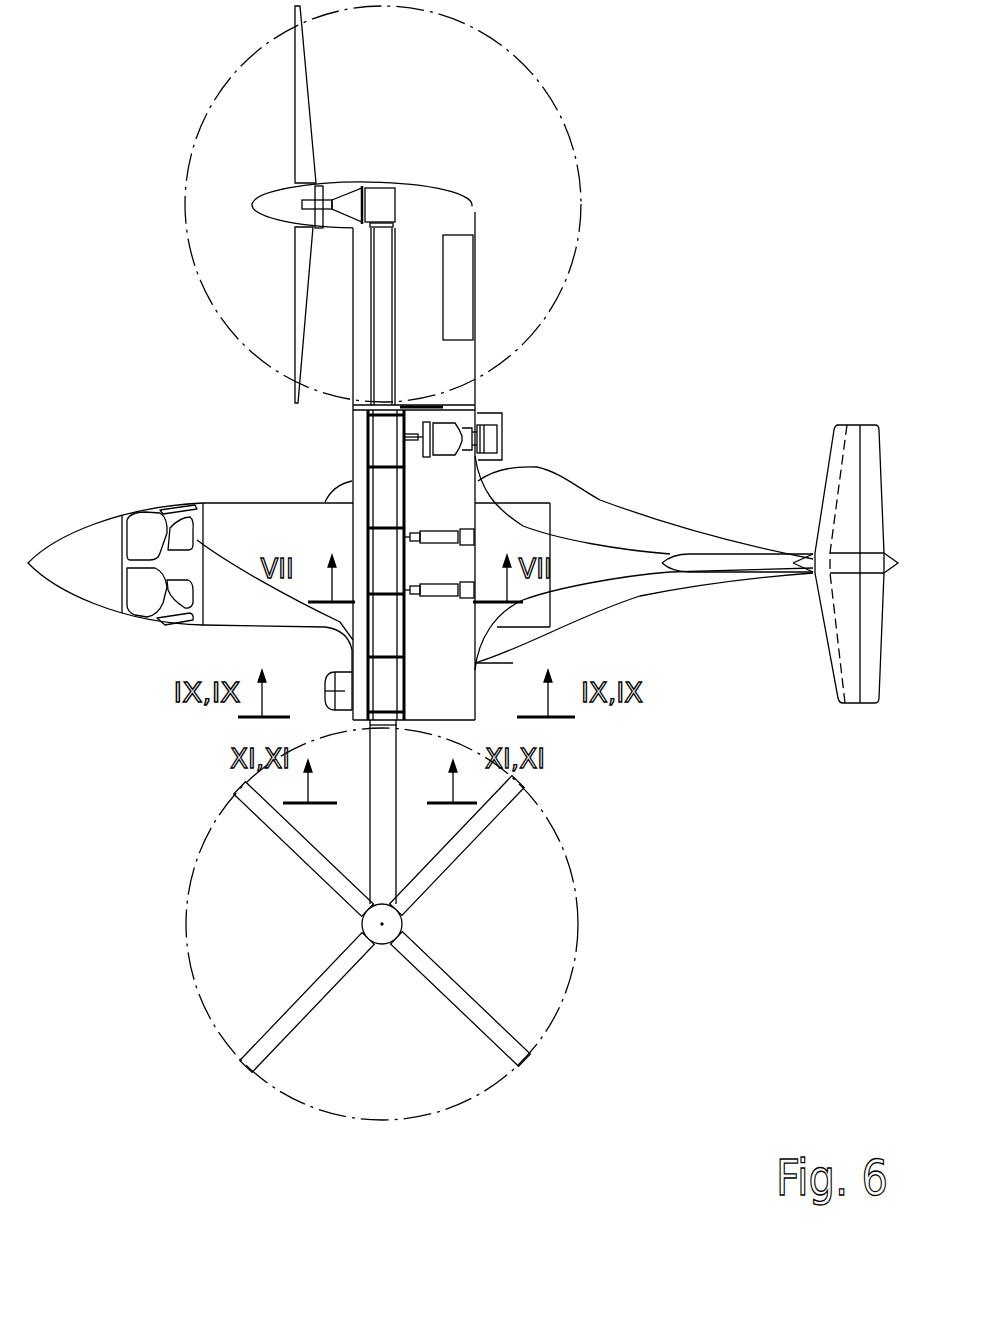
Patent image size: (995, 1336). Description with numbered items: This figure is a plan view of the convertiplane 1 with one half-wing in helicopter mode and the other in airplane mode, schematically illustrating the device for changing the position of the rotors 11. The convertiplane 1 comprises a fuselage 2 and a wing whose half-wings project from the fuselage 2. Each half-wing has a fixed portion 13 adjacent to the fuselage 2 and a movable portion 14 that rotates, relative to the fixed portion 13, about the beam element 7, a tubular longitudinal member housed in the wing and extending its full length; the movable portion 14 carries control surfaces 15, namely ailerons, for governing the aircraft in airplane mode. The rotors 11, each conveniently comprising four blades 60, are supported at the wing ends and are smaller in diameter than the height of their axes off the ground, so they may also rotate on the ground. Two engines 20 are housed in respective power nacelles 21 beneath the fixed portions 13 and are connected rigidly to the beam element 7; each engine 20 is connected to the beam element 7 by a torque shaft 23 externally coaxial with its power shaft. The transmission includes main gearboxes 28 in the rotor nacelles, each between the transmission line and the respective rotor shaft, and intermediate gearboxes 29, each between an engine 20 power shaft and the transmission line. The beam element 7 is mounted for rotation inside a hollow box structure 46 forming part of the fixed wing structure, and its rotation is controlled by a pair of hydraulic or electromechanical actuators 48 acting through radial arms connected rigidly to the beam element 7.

The convertiplane 1 is at (694, 234).
The fuselage 2 is at (643, 530).
The beam element 7 is at (437, 587).
The rotor 11 is at (288, 160).
The fixed portion 13 is at (355, 484).
The movable portion 14 is at (428, 367).
The control surfaces 15 is at (462, 265).
The engine 20 is at (475, 413).
The power nacelle 21 is at (335, 692).
The torque shaft 23 is at (407, 440).
The main gearbox 28 is at (387, 207).
The intermediate gearbox 29 is at (385, 428).
The hollow box structure 46 is at (387, 440).
The actuator 48 is at (376, 561).
The blade 60 is at (293, 117).